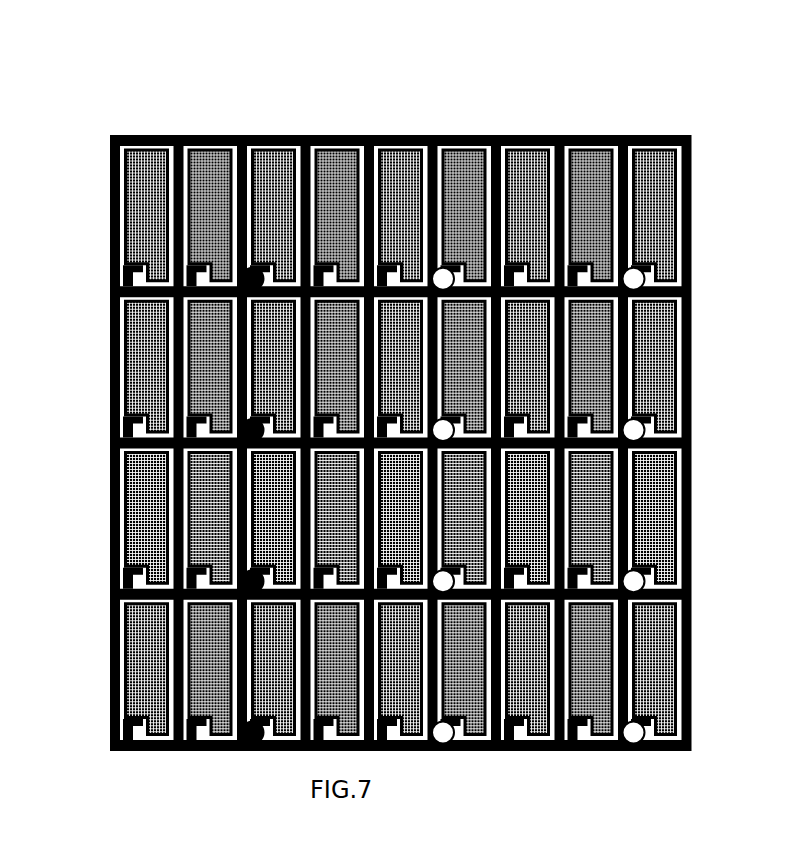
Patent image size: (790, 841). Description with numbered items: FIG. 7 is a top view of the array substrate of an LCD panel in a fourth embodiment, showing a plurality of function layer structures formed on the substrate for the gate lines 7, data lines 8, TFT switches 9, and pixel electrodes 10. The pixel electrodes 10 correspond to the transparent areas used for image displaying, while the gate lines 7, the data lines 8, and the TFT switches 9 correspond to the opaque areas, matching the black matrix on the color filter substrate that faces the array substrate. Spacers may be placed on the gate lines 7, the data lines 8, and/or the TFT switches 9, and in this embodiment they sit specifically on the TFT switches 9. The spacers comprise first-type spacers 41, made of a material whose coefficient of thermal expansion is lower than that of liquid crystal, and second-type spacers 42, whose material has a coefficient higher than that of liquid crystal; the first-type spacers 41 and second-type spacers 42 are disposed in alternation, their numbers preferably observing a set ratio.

The gate lines 7 is at (114, 137).
The data lines 8 is at (177, 137).
The TFT switches 9 is at (190, 422).
The pixel electrodes 10 is at (272, 168).
The first-type spacers 41 is at (257, 268).
The second-type spacers 42 is at (621, 264).